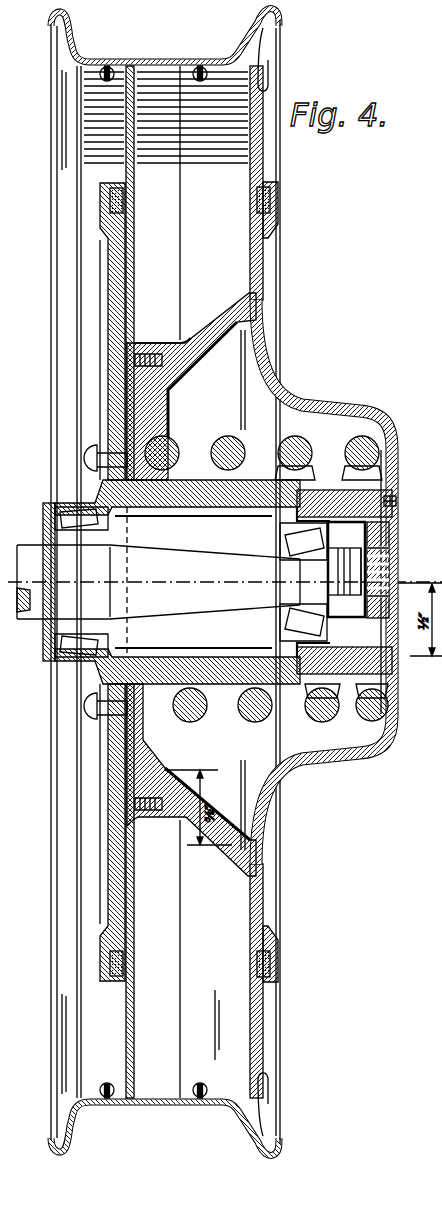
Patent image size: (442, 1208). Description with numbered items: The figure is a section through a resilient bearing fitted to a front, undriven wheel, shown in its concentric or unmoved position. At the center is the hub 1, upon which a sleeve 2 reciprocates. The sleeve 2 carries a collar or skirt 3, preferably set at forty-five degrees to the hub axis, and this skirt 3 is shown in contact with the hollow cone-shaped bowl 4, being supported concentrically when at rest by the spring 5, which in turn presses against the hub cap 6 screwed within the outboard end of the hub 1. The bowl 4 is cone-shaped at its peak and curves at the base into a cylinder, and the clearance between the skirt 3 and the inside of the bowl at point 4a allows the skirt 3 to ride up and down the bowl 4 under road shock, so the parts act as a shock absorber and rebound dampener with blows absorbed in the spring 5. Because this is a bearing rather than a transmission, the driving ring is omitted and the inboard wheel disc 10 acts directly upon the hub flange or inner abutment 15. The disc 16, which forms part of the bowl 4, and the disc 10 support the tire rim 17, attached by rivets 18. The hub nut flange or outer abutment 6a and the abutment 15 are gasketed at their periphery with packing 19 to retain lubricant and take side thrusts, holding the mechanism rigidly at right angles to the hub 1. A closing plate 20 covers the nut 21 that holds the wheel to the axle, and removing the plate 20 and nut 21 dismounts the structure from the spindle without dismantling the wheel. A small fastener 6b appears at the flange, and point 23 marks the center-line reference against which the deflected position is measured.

The hub 1 is at (320, 490).
The sleeve 2 is at (188, 484).
The skirt 3 is at (188, 395).
The cone-shaped bowl 4 is at (214, 322).
The point on bowl 4a is at (255, 855).
The spring 5 is at (228, 440).
The hub cap 6 is at (383, 425).
The hub nut flange 6a is at (270, 305).
The bolt 6b is at (398, 500).
The wheel disc 10 is at (135, 248).
The hub flange 15 is at (115, 293).
The disc 16 is at (250, 212).
The tire rim 17 is at (155, 62).
The rivets 18 is at (108, 66).
The packing 19 is at (112, 200).
The closing plate 20 is at (396, 556).
The nut 21 is at (345, 600).
The point showing center line offset 23 is at (441, 686).